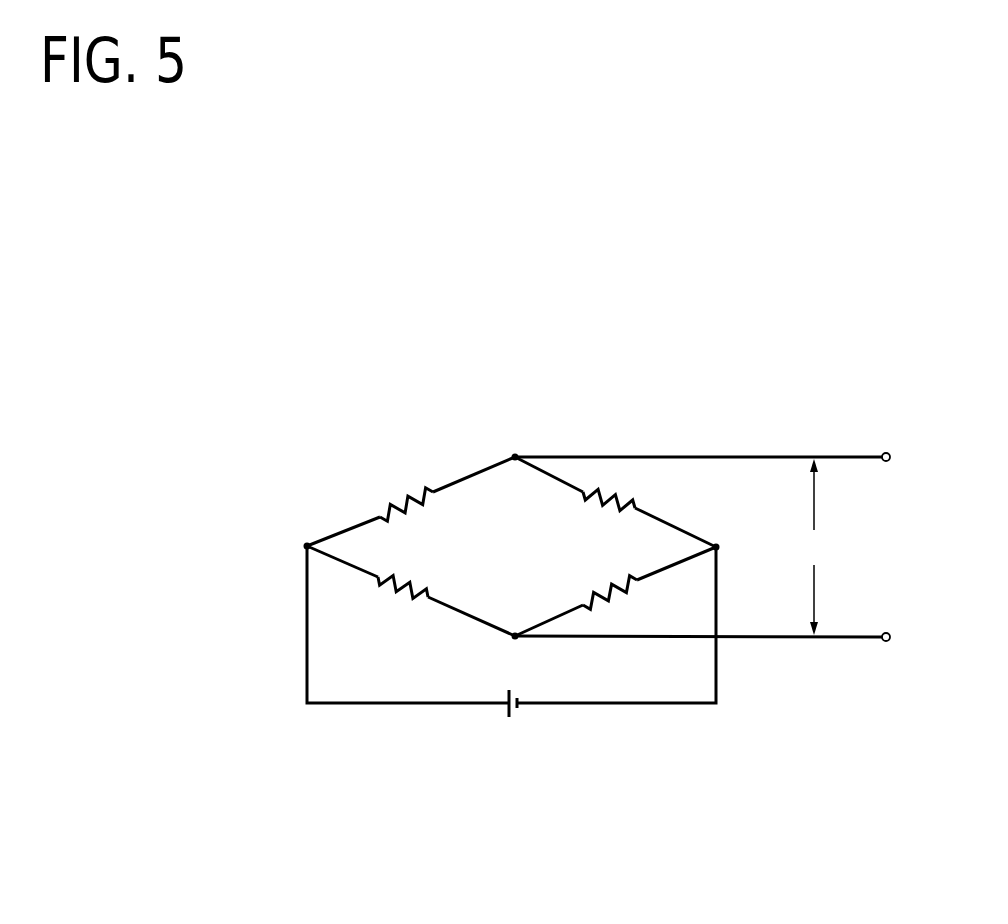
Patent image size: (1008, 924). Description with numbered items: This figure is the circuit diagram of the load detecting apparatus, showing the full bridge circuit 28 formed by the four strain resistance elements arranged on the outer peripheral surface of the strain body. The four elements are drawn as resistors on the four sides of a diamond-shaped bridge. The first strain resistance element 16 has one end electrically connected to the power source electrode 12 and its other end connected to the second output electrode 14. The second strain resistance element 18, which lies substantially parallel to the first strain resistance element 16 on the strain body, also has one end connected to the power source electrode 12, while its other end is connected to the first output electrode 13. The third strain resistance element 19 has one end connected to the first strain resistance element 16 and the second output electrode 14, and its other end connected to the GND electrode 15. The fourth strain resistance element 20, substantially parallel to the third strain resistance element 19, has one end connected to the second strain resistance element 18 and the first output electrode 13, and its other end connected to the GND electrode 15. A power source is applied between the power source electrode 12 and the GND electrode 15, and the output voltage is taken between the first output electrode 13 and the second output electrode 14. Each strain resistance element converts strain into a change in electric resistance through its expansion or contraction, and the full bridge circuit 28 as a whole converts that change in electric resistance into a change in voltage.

The power source electrode 12 is at (307, 546).
The first output electrode 13 is at (515, 457).
The second output electrode 14 is at (515, 636).
The GND electrode 15 is at (716, 547).
The first strain resistance element 16 is at (397, 578).
The second strain resistance element 18 is at (418, 492).
The third strain resistance element 19 is at (600, 592).
The fourth strain resistance element 20 is at (615, 493).
The full bridge circuit 28 is at (723, 362).